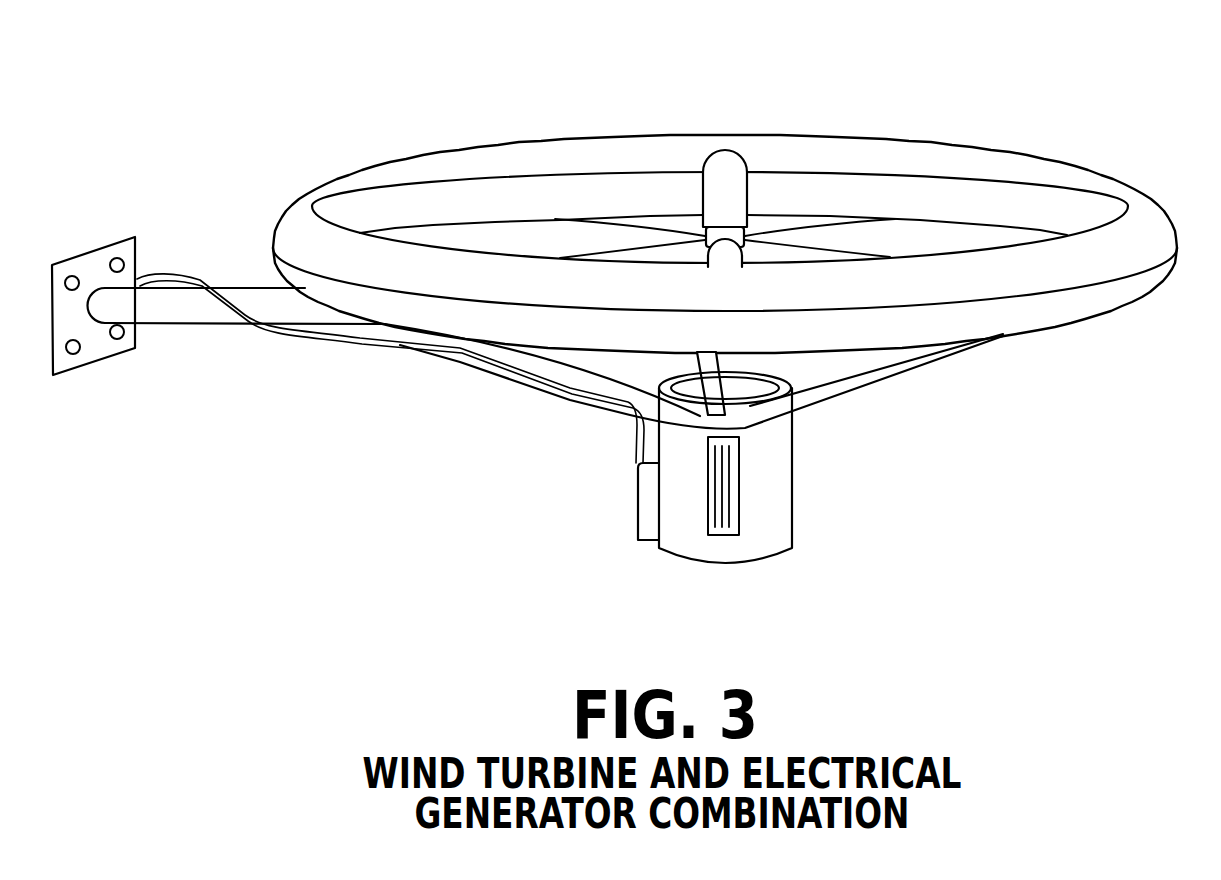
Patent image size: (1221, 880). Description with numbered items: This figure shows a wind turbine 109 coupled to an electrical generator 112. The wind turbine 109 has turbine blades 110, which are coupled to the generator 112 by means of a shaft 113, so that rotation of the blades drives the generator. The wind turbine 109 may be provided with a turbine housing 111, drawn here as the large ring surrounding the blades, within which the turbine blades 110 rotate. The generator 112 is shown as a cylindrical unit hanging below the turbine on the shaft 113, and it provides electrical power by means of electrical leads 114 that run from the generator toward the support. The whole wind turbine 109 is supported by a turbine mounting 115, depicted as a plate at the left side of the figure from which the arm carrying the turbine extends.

The wind turbine 109 is at (787, 135).
The turbine blades 110 is at (890, 237).
The turbine housing 111 is at (1108, 310).
The generator 112 is at (795, 512).
The shaft 113 is at (733, 363).
The electrical leads 114 is at (500, 377).
The turbine mounting 115 is at (102, 245).